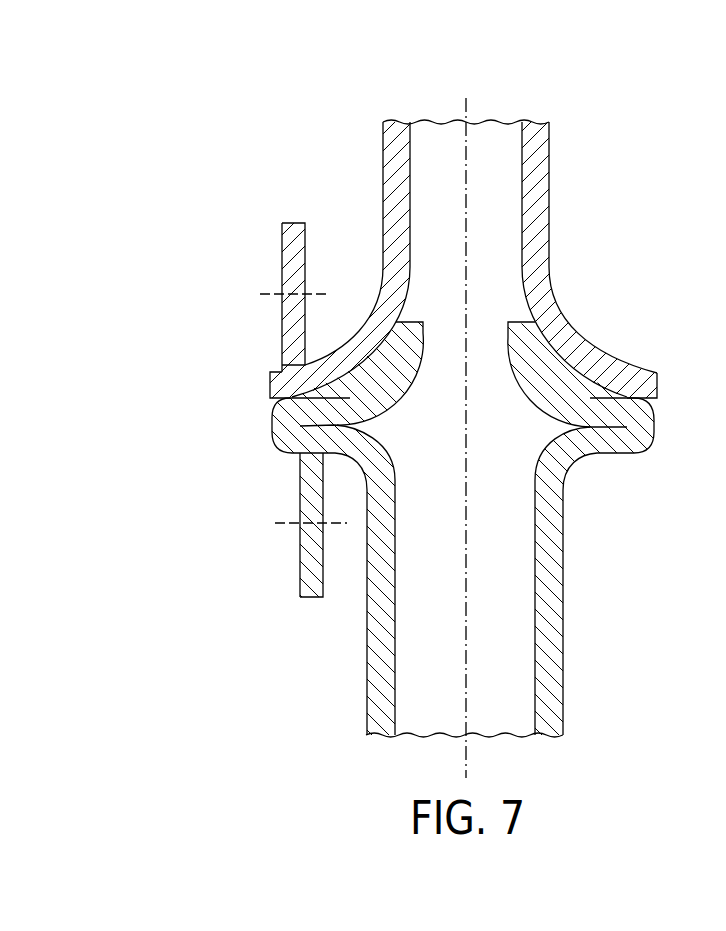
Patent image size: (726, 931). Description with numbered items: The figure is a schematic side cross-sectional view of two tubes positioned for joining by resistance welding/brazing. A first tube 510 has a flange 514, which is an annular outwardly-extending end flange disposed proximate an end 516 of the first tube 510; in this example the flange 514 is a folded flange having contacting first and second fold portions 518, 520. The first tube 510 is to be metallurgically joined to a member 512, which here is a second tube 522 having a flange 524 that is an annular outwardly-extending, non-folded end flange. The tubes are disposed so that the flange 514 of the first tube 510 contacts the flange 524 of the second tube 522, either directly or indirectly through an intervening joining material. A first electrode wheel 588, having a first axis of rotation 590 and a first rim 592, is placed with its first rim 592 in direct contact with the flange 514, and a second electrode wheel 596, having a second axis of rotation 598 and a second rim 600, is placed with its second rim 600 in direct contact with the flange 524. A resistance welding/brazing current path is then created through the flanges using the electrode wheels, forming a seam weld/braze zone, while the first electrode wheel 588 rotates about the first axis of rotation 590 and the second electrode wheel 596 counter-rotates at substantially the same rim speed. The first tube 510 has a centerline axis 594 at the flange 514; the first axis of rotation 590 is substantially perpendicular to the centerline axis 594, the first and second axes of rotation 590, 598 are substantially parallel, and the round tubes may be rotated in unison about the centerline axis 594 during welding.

The first tube 510 is at (564, 592).
The member 512 is at (553, 197).
The flange 514 is at (636, 456).
The end of the first tube 516 is at (518, 324).
The first fold portion 518 is at (617, 441).
The second fold portion 520 is at (653, 403).
The second tube 522 is at (551, 147).
The flange of the second tube 524 is at (624, 372).
The first electrode wheel 588 is at (299, 578).
The first axis of rotation 590 is at (282, 523).
The first rim 592 is at (305, 598).
The centerline axis 594 is at (465, 107).
The second electrode wheel 596 is at (280, 250).
The second axis of rotation 598 is at (272, 295).
The second rim 600 is at (295, 222).